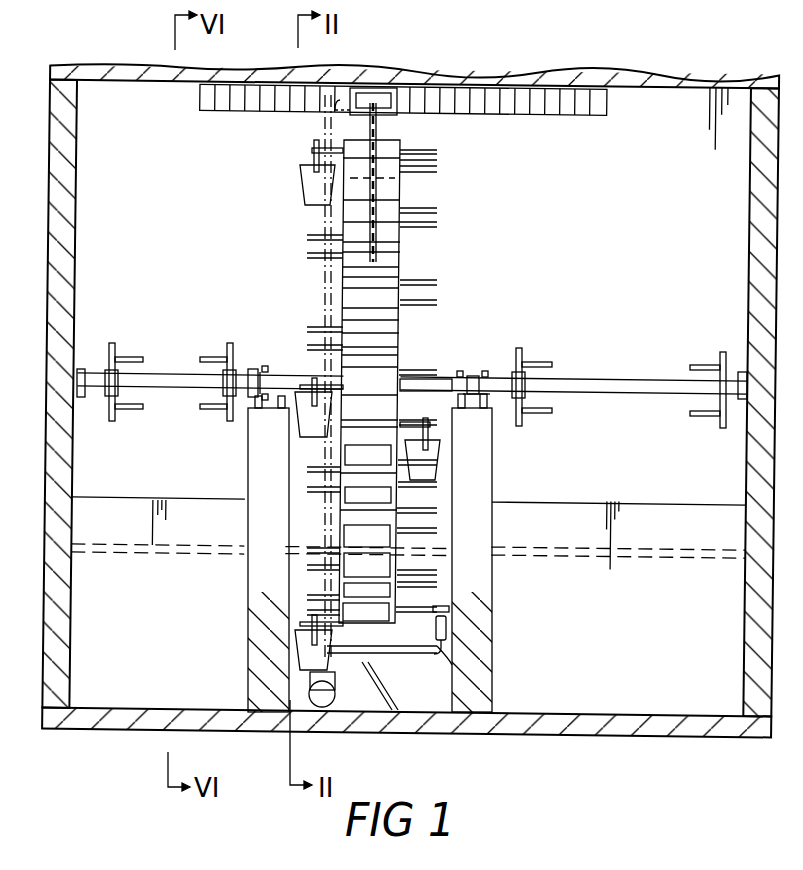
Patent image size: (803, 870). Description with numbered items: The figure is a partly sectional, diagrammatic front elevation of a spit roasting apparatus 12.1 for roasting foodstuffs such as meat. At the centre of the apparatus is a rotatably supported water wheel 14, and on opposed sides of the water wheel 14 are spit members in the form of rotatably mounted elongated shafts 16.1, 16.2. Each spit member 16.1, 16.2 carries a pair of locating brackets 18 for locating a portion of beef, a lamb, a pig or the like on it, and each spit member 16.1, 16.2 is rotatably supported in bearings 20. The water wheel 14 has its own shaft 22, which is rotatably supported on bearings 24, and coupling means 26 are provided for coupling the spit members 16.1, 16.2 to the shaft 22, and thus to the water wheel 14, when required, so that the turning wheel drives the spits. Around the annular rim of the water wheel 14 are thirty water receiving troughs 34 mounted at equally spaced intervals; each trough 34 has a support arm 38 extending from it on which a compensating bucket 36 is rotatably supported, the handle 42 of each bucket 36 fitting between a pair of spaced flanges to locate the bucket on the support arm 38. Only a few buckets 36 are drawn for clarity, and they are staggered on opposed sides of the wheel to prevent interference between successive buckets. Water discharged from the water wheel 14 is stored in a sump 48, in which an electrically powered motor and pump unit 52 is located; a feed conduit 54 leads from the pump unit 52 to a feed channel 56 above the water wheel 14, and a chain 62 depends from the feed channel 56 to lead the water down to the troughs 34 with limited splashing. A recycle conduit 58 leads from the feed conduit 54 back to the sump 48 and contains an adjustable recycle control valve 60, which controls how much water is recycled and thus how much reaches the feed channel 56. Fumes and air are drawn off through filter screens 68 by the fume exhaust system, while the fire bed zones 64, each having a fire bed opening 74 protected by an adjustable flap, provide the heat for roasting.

The spit roasting apparatus 12.1 is at (49, 74).
The water wheel 14 is at (546, 264).
The spit member 16.1 is at (165, 372).
The spit member 16.2 is at (630, 376).
The locating brackets 18 is at (112, 343).
The bearings 20 is at (82, 368).
The shaft 22 is at (440, 380).
The bearings 24 is at (284, 385).
The coupling means 26 is at (265, 362).
The water receiving troughs 34 is at (392, 566).
The compensating bucket 36 is at (305, 190).
The support arm 38 is at (437, 300).
The handle 42 is at (312, 152).
The sump 48 is at (445, 655).
The motor and pump unit 52 is at (324, 707).
The feed conduit 54 is at (320, 238).
The feed channel 56 is at (395, 102).
The recycle conduit 58 is at (400, 689).
The recycle control valve 60 is at (445, 606).
The chain 62 is at (400, 200).
The fire bed zones 64 is at (126, 539).
The filter screens 68 is at (550, 105).
The fire bed opening 74 is at (173, 650).